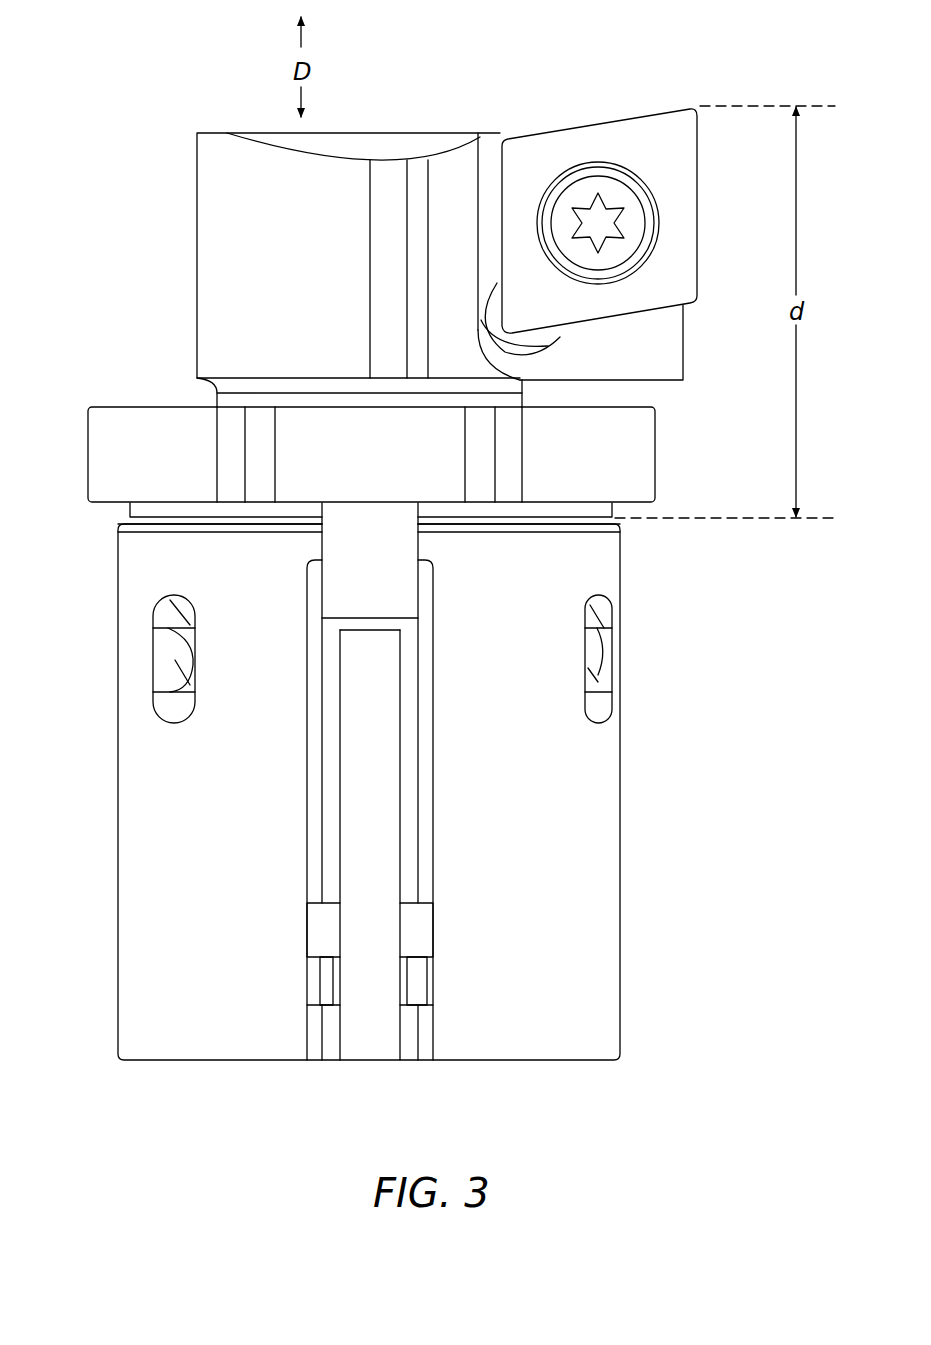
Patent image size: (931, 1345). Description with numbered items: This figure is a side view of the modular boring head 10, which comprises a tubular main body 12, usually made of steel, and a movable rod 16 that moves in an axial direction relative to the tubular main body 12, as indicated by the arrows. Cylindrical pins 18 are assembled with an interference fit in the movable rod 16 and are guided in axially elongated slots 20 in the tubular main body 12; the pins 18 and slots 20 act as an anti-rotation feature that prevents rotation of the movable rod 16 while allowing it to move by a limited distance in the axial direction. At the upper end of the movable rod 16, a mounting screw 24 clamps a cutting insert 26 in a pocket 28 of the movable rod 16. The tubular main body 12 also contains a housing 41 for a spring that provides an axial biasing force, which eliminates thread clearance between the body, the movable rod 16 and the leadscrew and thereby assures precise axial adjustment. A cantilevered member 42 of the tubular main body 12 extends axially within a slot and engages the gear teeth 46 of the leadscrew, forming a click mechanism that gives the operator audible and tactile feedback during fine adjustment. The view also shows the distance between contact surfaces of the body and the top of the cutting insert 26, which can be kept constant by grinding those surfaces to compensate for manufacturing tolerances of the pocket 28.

The modular boring head 10 is at (117, 103).
The tubular main body 12 is at (592, 830).
The movable rod 16 is at (188, 230).
The cylindrical pins 18 is at (178, 635).
The axially elongated slots 20 is at (165, 678).
The mounting screw 24 is at (603, 222).
The cutting insert 26 is at (553, 152).
The pocket 28 is at (690, 347).
The housing 41 is at (322, 822).
The cantilevered member 42 is at (375, 987).
The gear teeth 46 is at (326, 1005).